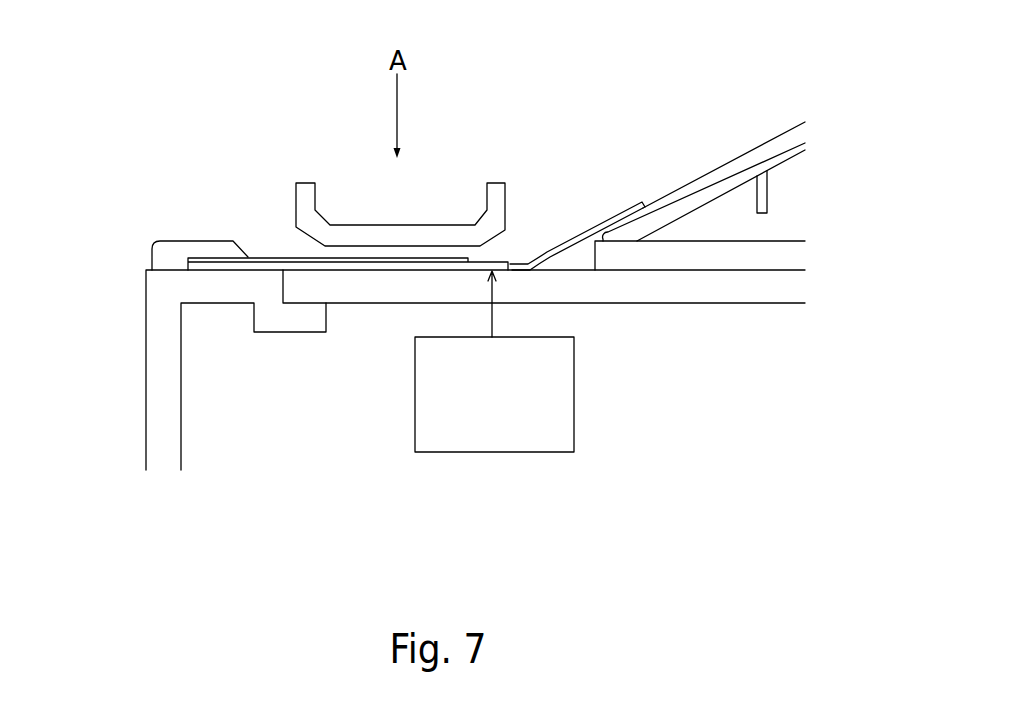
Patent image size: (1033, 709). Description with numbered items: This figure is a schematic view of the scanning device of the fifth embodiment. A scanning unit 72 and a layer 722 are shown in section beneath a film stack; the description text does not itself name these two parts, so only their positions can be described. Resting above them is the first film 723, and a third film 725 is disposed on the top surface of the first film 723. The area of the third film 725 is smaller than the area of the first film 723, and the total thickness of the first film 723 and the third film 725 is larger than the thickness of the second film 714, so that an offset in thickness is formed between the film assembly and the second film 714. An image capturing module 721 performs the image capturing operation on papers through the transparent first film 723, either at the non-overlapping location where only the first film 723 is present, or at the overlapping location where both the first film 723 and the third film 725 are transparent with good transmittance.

The base 72 is at (132, 378).
The second film 714 is at (560, 246).
The image capturing module 721 is at (494, 361).
The support layer 722 is at (665, 290).
The first film 723 is at (303, 270).
The third film 725 is at (278, 258).